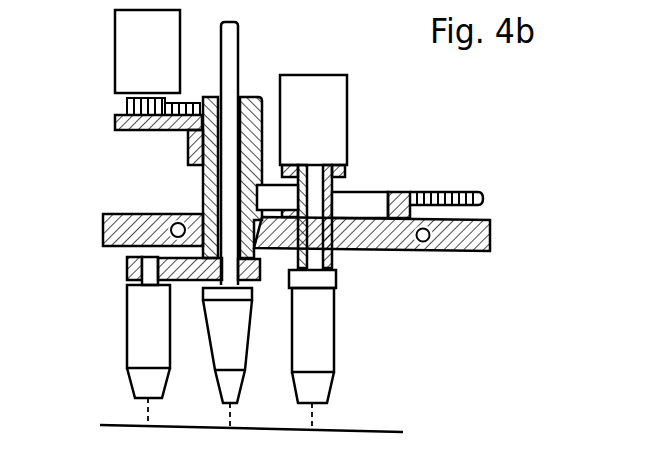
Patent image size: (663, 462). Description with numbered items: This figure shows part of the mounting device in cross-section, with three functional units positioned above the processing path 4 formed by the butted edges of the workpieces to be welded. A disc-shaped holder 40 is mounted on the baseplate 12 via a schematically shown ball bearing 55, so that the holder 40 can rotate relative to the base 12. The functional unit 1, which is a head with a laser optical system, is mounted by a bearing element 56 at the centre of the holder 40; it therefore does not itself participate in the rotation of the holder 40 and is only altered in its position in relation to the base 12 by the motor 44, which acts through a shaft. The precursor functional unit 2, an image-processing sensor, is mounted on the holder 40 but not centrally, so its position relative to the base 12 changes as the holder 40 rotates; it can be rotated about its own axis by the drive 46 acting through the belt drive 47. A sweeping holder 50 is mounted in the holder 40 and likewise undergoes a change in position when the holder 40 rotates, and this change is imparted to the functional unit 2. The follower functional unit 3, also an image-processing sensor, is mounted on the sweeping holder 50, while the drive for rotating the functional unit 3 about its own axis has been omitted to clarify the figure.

The functional unit 1 is at (300, 345).
The functional unit 2 is at (218, 342).
The functional unit 3 is at (133, 341).
The processing path 4 is at (106, 423).
The baseplate 12 is at (478, 251).
The disc-shaped holder 40 is at (373, 237).
The motor 44 is at (328, 108).
The drive 46 is at (133, 40).
The belt drive 47 is at (126, 107).
The sweeping holder 50 is at (126, 266).
The ball bearing 55 is at (428, 242).
The bearing element 56 is at (332, 193).